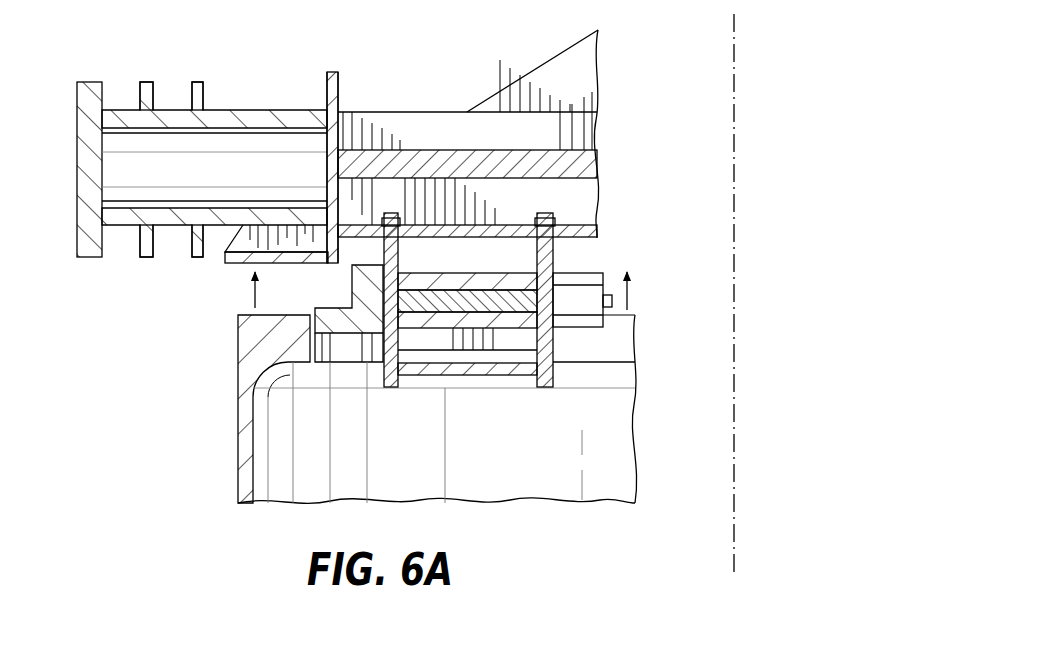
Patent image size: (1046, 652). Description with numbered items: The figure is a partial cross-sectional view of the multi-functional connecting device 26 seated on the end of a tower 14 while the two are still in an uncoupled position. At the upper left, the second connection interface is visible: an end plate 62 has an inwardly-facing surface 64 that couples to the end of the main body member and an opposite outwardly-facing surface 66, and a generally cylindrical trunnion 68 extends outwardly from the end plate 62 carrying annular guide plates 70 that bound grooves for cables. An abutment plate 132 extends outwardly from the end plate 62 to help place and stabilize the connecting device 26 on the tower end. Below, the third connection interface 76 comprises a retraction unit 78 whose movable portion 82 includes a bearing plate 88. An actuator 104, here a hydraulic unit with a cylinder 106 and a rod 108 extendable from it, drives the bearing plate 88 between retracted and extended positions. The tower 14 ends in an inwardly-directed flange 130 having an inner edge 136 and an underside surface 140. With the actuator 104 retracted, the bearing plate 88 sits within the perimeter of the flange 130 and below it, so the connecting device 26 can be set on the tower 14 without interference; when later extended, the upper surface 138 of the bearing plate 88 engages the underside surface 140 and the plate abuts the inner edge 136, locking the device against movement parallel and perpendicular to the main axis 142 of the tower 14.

The tower 14 is at (234, 482).
The multi-functional connecting device 26 is at (608, 135).
The end plate 62 is at (337, 72).
The inwardly-facing surface 64 is at (339, 89).
The outwardly-facing surface 66 is at (326, 90).
The trunnion 68 is at (252, 117).
The guide plate 70 is at (148, 82).
The third connection interface 76 is at (500, 405).
The retraction unit 78 is at (558, 373).
The movable portion 82 is at (406, 347).
The bearing plate 88 is at (353, 340).
The actuator 104 is at (592, 270).
The cylinder 106 is at (502, 318).
The rod 108 is at (528, 316).
The inwardly-directed flange 130 is at (242, 409).
The abutment plate 132 is at (242, 267).
The inner edge 136 is at (316, 347).
The upper surface 138 is at (350, 303).
The underside surface 140 is at (252, 394).
The main axis 142 is at (736, 424).